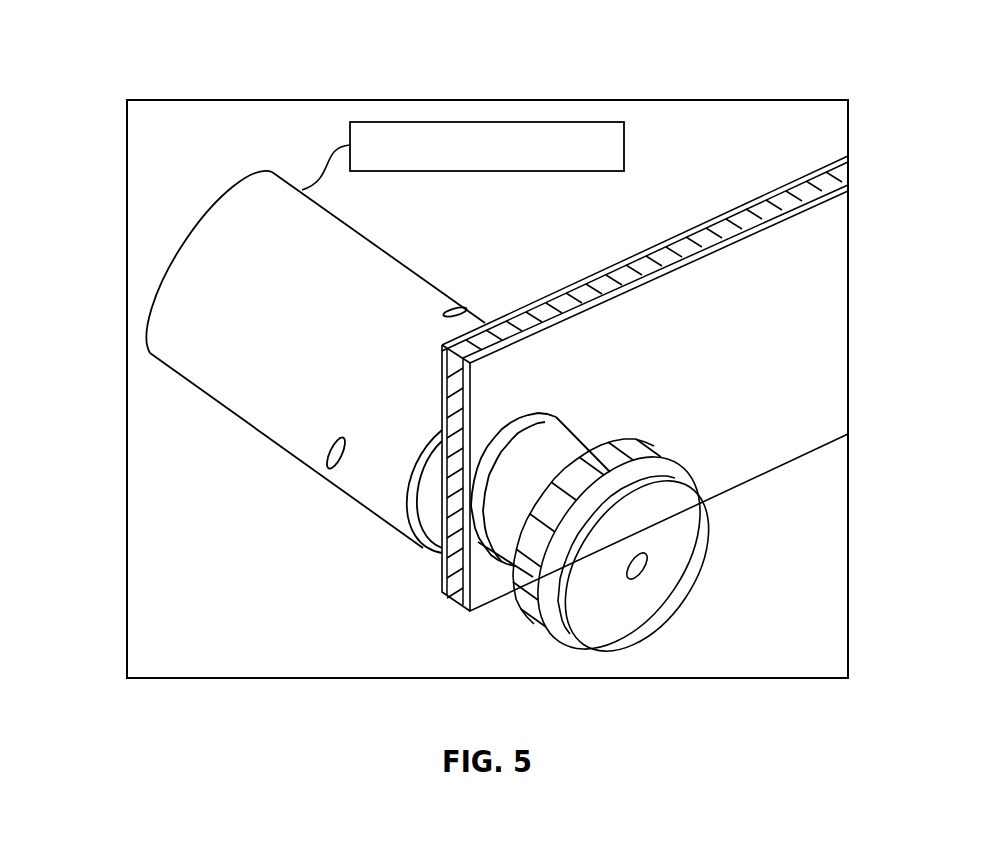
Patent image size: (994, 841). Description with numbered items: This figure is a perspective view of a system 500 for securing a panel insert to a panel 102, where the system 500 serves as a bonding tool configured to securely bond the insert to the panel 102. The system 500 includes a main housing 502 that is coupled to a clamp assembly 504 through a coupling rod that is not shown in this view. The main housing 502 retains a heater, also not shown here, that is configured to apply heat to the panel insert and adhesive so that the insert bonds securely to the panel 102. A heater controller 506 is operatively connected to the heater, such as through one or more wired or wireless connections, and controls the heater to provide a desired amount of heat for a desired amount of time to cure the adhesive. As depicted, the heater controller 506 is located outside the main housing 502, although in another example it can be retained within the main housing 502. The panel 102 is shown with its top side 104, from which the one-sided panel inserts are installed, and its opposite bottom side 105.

The system 500 is at (208, 138).
The main housing 502 is at (168, 236).
The clamp assembly 504 is at (702, 562).
The heater controller 506 is at (490, 122).
The panel 102 is at (749, 253).
The top side 104 is at (701, 224).
The bottom side 105 is at (793, 336).